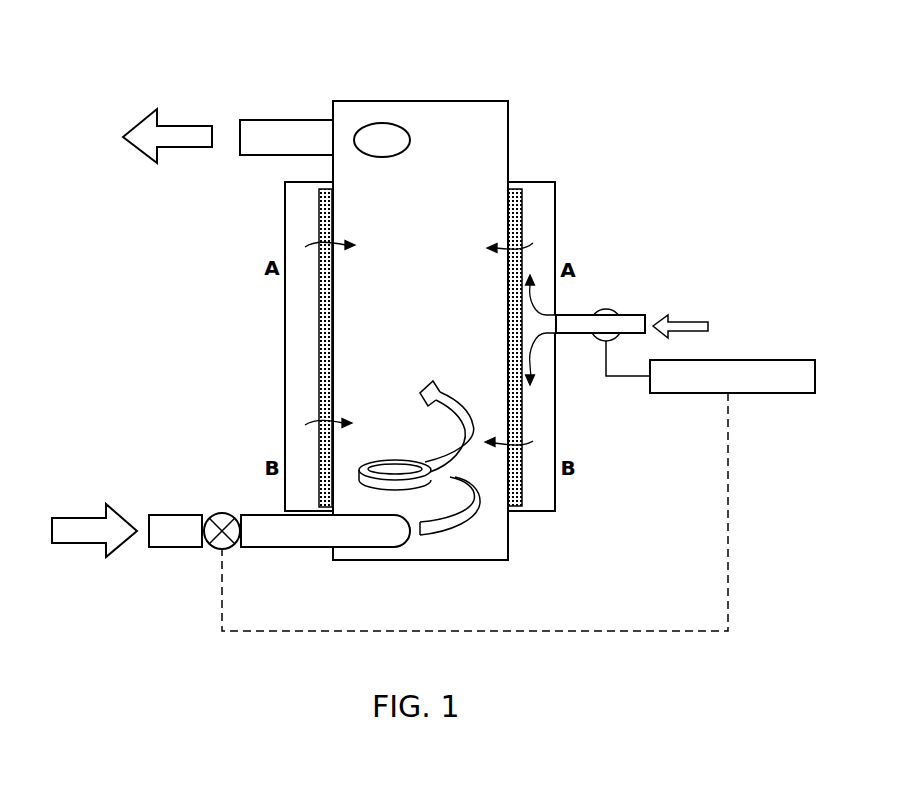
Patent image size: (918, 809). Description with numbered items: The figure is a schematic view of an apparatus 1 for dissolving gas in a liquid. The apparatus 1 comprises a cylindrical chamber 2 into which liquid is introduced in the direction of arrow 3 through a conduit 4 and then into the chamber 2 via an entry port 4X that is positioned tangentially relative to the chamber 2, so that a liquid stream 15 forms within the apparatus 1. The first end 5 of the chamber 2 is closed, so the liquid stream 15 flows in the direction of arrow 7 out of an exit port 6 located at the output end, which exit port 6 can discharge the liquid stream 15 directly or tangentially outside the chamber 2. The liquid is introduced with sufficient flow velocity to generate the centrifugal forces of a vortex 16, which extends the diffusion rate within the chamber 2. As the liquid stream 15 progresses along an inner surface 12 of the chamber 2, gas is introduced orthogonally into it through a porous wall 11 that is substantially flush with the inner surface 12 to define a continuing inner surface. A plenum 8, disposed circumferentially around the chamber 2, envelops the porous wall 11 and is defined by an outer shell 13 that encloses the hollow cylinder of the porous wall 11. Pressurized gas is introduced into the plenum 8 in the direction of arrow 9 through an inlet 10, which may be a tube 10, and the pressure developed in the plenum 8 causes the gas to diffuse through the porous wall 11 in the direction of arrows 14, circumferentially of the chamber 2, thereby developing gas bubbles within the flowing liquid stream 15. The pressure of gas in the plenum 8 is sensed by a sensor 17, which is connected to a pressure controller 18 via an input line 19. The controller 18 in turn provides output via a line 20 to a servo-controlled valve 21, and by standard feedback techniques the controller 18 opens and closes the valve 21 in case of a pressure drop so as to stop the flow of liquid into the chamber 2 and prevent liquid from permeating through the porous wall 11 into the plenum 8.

The apparatus 1 is at (420, 297).
The cylindrical chamber 2 is at (440, 108).
The arrow 3 is at (82, 522).
The conduit 4 is at (288, 544).
The entry port 4X is at (378, 542).
The first end 5 is at (470, 562).
The exit port 6 is at (279, 130).
The arrow 7 is at (180, 133).
The plenum 8 is at (538, 190).
The arrow 9 is at (710, 326).
The inlet 10 is at (640, 312).
The porous wall 11 is at (521, 218).
The inner surface 12 is at (512, 514).
The outer shell 13 is at (555, 432).
The arrows 14 is at (533, 245).
The liquid stream 15 is at (460, 523).
The vortex 16 is at (370, 463).
The sensor 17 is at (606, 308).
The pressure controller 18 is at (762, 394).
The input line 19 is at (612, 368).
The output line 20 is at (615, 631).
The servo-controlled valve 21 is at (213, 548).